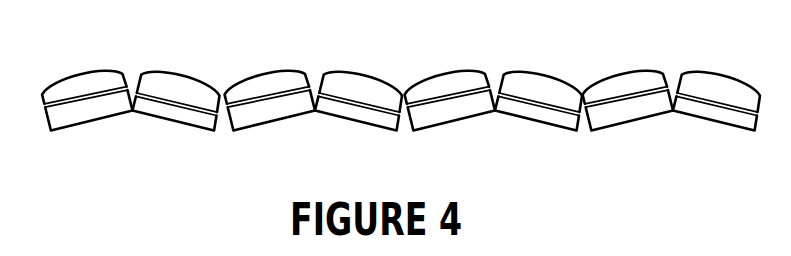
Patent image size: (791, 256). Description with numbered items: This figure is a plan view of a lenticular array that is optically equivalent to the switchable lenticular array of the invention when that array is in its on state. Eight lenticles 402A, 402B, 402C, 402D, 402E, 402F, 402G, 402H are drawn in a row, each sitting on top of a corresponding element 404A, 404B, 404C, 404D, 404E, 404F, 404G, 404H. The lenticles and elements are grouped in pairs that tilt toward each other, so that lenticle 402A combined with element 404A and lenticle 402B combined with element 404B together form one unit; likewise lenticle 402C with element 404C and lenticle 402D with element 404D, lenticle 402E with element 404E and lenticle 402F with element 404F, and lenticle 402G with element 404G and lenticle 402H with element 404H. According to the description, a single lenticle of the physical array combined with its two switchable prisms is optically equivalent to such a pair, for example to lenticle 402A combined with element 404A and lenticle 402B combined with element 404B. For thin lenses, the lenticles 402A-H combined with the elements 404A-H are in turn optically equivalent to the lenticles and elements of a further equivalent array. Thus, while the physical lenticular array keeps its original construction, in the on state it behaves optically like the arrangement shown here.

The lenticle 402A is at (88, 70).
The lenticle 402B is at (193, 52).
The lenticle 402C is at (270, 71).
The lenticle 402D is at (358, 71).
The lenticle 402E is at (455, 71).
The lenticle 402F is at (537, 71).
The lenticle 402G is at (630, 71).
The lenticle 402H is at (720, 71).
The element 404A is at (86, 133).
The element 404B is at (177, 133).
The element 404C is at (270, 133).
The element 404D is at (360, 133).
The element 404E is at (448, 133).
The element 404F is at (540, 133).
The element 404G is at (628, 133).
The element 404H is at (720, 133).